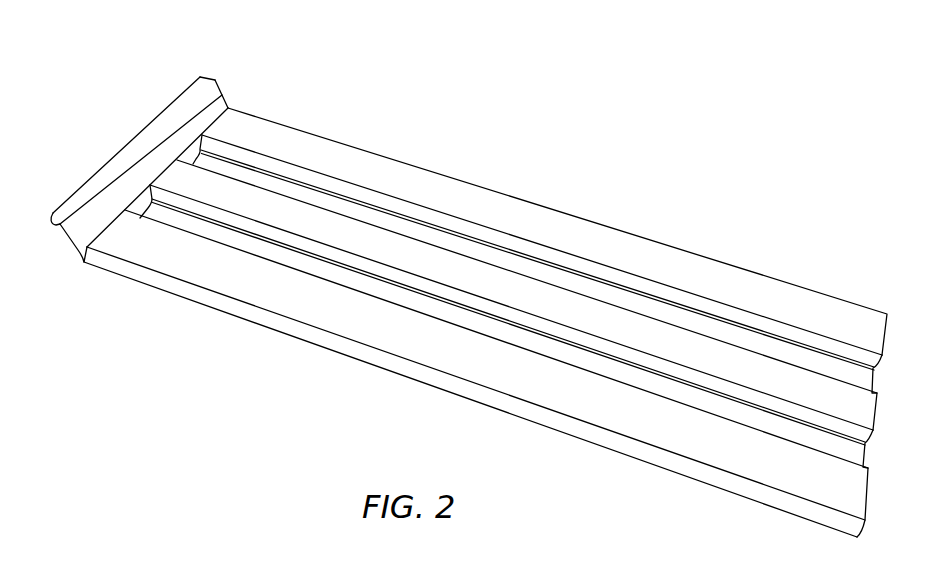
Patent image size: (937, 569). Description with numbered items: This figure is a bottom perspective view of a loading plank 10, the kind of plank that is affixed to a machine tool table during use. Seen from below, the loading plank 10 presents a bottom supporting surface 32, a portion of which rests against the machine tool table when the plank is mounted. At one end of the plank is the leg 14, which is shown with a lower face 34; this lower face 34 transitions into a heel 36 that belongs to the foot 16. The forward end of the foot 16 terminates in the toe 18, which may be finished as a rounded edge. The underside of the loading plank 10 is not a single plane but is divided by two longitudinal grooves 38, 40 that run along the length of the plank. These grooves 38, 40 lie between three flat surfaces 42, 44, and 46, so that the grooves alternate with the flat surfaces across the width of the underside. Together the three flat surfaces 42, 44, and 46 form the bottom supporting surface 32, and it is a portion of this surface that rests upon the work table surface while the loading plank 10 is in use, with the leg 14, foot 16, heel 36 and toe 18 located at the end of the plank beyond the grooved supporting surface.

The loading plank 10 is at (459, 284).
The leg 14 is at (67, 244).
The foot 16 is at (203, 75).
The toe 18 is at (153, 156).
The bottom supporting surface 32 is at (485, 288).
The lower face 34 is at (223, 100).
The heel 36 is at (215, 78).
The longitudinal groove 38 is at (685, 397).
The longitudinal groove 40 is at (732, 337).
The flat surface 42 is at (743, 463).
The flat surface 44 is at (783, 380).
The flat surface 46 is at (833, 307).